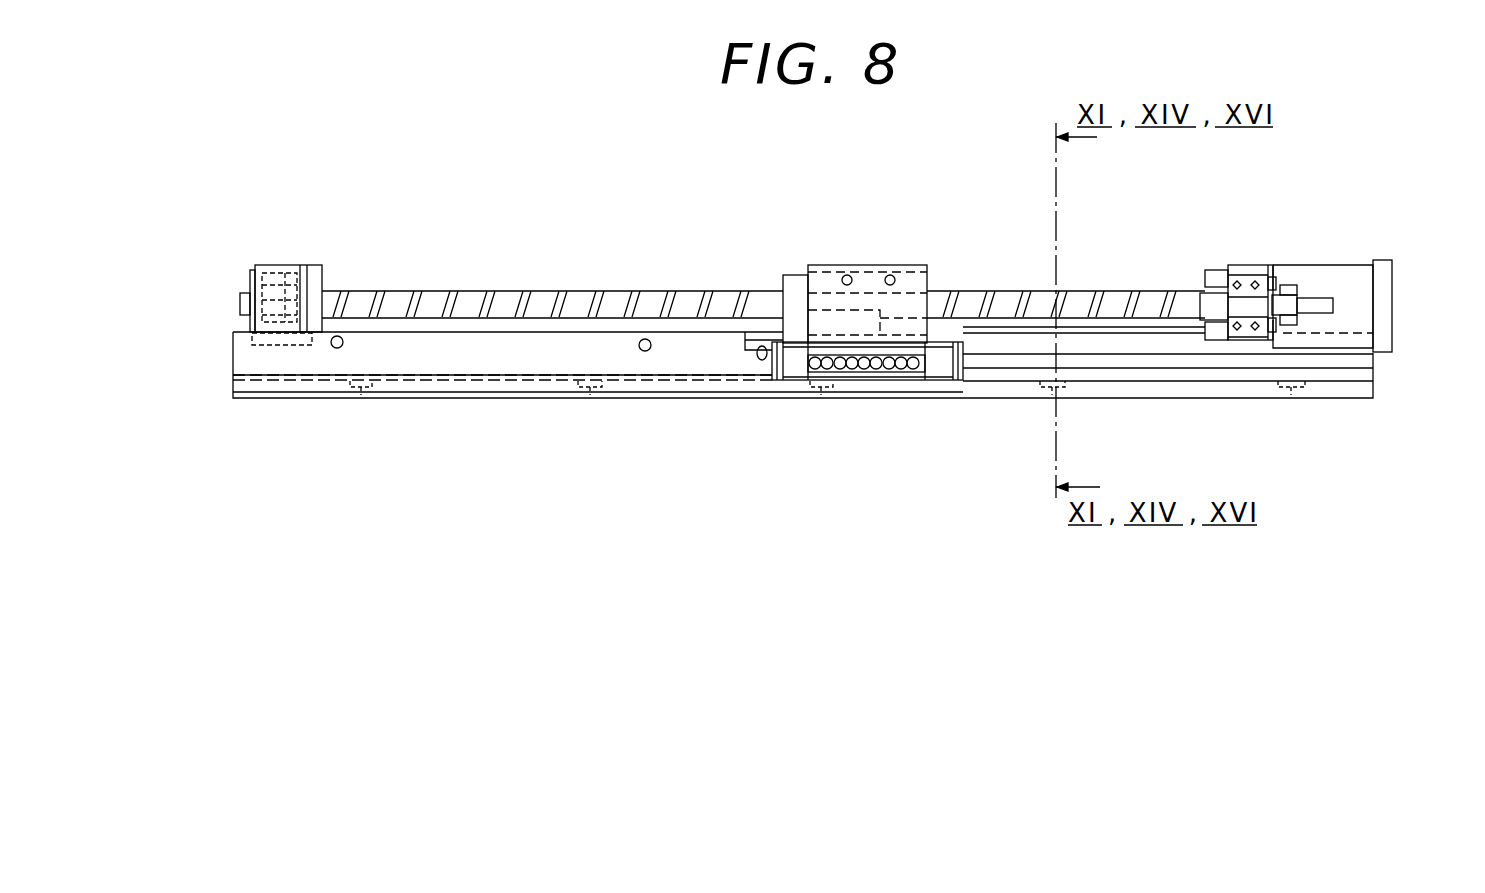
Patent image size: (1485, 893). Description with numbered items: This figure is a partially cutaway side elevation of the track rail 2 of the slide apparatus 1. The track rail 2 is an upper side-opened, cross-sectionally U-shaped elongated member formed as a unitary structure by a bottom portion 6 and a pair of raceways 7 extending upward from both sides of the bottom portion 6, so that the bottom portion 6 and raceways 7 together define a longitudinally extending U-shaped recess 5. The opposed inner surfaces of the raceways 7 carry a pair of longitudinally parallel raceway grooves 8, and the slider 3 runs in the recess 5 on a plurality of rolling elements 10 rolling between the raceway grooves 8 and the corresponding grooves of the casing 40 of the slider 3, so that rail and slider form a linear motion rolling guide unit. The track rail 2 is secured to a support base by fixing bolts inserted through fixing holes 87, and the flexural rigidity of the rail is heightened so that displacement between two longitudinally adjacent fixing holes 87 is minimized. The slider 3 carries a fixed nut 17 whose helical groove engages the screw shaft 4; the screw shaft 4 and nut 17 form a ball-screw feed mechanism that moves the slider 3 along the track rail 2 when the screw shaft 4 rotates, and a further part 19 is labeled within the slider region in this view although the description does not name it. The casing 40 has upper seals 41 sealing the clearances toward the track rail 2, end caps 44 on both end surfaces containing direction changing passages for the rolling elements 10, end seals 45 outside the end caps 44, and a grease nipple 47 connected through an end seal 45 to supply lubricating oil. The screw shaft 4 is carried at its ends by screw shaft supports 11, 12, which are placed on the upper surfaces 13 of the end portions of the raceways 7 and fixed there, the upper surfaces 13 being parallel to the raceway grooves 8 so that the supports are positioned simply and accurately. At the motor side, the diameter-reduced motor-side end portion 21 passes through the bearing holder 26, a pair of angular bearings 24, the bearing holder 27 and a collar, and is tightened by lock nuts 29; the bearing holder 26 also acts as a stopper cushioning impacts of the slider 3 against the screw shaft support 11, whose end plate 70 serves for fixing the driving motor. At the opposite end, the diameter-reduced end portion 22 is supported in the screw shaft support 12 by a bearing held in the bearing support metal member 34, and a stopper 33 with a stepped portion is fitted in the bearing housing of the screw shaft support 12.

The slide apparatus 1 is at (983, 288).
The track rail 2 is at (670, 402).
The slider 3 is at (870, 262).
The screw shaft 4 is at (1104, 306).
The U-shaped recess 5 is at (1095, 372).
The bottom portion 6 is at (1340, 372).
The raceways 7 is at (306, 360).
The raceway grooves 8 is at (1180, 360).
The rolling elements 10 is at (894, 374).
The screw shaft support 11 is at (1246, 268).
The screw shaft support 12 is at (283, 265).
The upper surfaces 13 is at (463, 333).
The nut 17 is at (789, 271).
The nut seat 19 is at (790, 285).
The motor-side end portion 21 is at (1257, 332).
The end portion 22 is at (262, 302).
The angular bearings 24 is at (1237, 332).
The bearing holder 26 is at (1213, 273).
The bearing holder 27 is at (1272, 280).
The lock nuts 29 is at (1287, 290).
The stopper 33 is at (316, 276).
The bearing support metal member 34 is at (250, 284).
The casing 40 is at (826, 268).
The upper seals 41 is at (867, 340).
The end caps 44 is at (794, 372).
The end seals 45 is at (775, 367).
The grease nipple 47 is at (758, 357).
The end plate 70 is at (1385, 303).
The fixing holes 87 is at (361, 395).